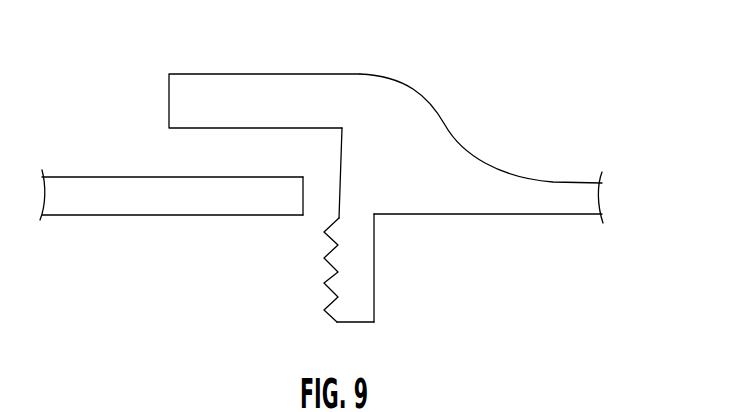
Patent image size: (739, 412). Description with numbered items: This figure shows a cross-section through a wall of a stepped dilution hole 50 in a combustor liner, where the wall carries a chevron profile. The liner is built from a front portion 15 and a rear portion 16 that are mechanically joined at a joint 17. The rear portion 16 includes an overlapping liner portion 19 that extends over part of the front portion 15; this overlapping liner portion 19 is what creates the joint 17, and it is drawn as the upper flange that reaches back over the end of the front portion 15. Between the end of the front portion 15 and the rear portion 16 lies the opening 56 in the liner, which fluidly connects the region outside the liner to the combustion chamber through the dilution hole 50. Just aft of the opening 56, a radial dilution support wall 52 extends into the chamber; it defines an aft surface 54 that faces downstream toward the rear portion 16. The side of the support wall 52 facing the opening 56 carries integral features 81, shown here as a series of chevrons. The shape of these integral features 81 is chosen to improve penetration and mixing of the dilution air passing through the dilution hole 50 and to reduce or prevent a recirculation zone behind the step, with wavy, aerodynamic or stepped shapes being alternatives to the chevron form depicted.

The dilution hole 50 is at (121, 128).
The joint 17 is at (435, 66).
The overlapping liner portion 19 is at (207, 73).
The front portion 15 is at (130, 216).
The opening 56 is at (303, 216).
The integral features 81 is at (326, 258).
The radial dilution support wall 52 is at (359, 322).
The aft surface 54 is at (373, 222).
The rear portion 16 is at (513, 215).